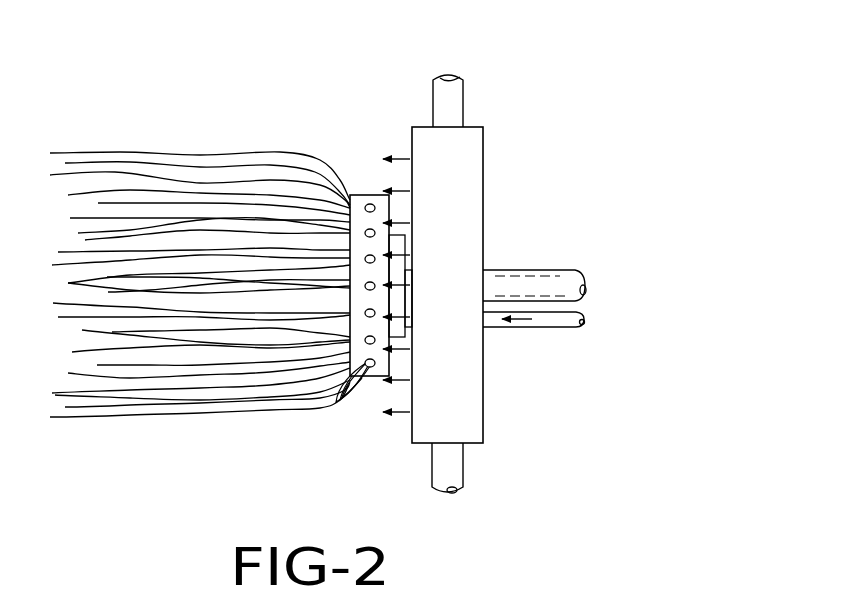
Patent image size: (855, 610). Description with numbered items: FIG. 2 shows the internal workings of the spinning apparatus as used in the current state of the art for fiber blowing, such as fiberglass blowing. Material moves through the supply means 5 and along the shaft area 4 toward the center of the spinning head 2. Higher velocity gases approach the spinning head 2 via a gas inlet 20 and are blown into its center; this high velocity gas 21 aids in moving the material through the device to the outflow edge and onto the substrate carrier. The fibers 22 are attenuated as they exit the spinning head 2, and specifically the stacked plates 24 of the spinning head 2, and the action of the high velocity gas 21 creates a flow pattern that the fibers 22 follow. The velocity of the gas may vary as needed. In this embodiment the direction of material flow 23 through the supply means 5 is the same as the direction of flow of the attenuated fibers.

The spinning head 2 is at (345, 208).
The shaft area 4 is at (530, 277).
The supply means 5 is at (570, 328).
The gas inlet 20 is at (450, 107).
The high velocity gas 21 is at (393, 383).
The fibers 22 is at (233, 363).
The direction of material flow 23 is at (540, 320).
The stacked plates 24 is at (362, 353).